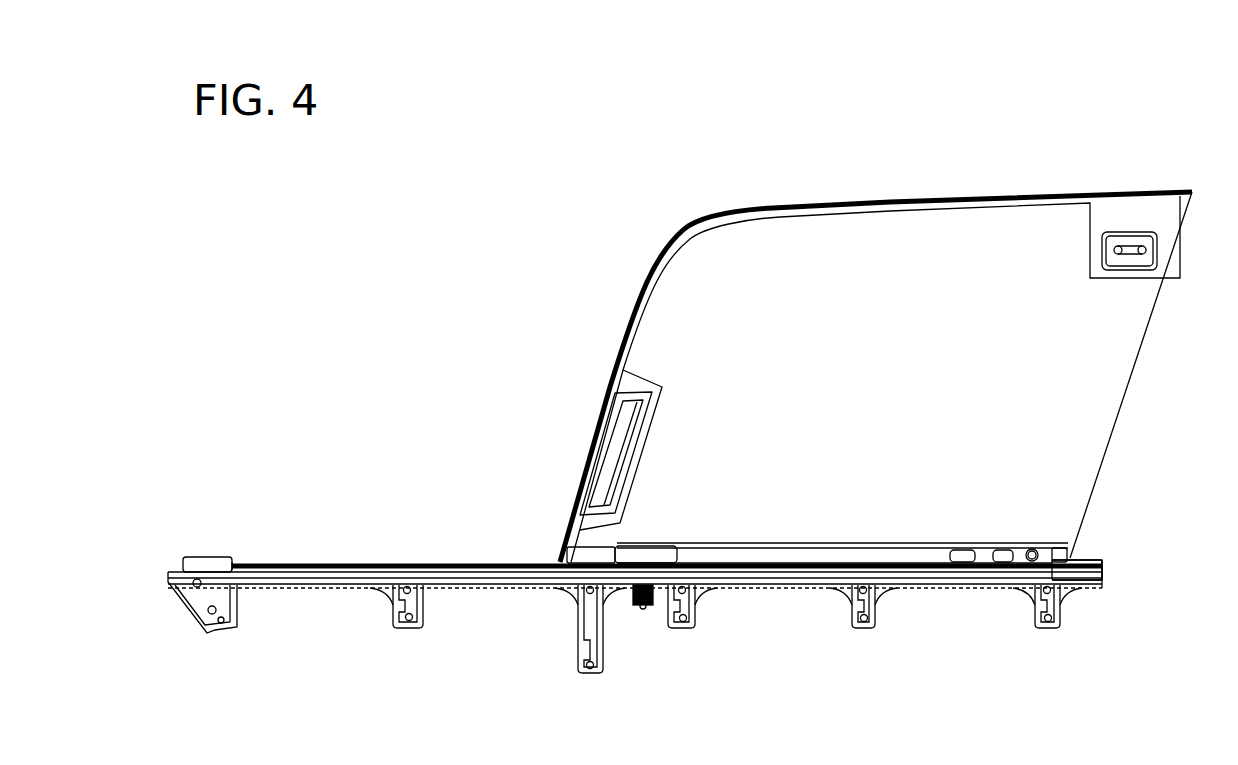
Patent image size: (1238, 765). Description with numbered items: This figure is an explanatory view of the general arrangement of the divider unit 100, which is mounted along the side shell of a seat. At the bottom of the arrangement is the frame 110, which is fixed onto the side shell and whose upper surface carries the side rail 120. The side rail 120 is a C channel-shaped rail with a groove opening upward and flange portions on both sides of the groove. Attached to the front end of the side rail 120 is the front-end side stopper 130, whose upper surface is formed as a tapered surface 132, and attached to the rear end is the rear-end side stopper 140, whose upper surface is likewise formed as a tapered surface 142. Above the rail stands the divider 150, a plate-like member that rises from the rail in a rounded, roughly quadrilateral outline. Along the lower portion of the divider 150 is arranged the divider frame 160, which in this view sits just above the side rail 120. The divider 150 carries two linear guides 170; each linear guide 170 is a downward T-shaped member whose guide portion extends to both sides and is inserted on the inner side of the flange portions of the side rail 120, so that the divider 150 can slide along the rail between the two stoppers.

The divider unit 100 is at (1165, 128).
The frame 110 is at (492, 580).
The side rail 120 is at (432, 564).
The front-end side stopper 130 is at (190, 556).
The tapered surface 132 is at (215, 557).
The rear-end side stopper 140 is at (1103, 562).
The tapered surface 142 is at (1075, 565).
The divider 150 is at (1087, 377).
The divider frame 160 is at (590, 552).
The linear guide 170 is at (636, 575).